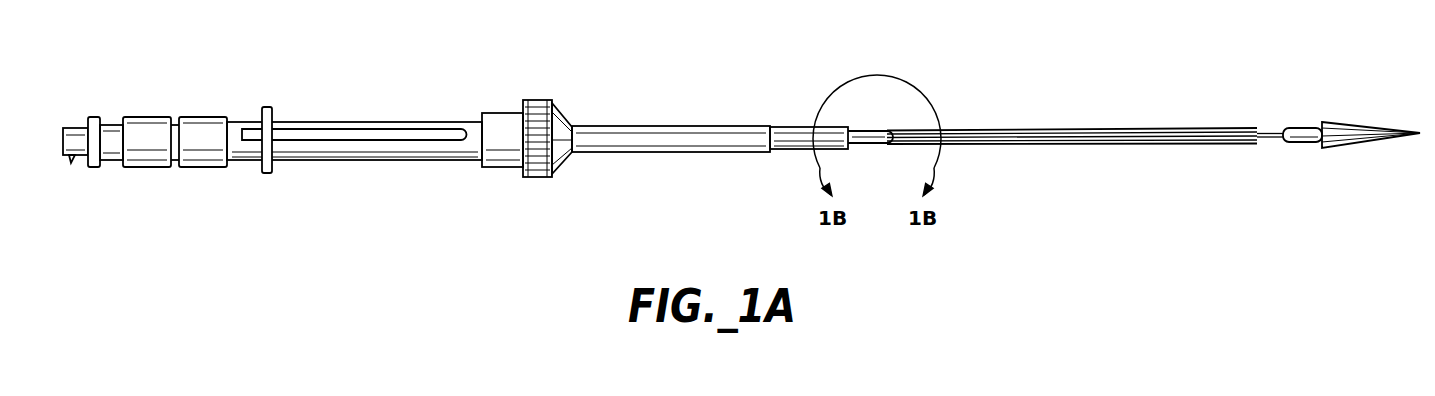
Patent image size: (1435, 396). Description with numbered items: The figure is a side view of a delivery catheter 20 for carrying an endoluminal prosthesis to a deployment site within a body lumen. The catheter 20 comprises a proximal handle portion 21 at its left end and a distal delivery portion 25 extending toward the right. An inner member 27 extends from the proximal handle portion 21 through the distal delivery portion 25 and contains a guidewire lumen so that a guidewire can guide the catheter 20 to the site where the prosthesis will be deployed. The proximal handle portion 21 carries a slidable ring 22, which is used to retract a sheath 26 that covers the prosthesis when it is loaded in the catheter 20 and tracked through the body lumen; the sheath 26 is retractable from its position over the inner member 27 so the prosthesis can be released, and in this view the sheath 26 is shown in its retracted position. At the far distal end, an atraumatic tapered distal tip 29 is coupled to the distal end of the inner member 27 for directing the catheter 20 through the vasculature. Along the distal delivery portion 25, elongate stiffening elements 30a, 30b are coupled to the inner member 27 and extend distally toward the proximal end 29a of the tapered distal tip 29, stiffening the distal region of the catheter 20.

The catheter 20 is at (588, 52).
The proximal handle portion 21 is at (349, 122).
The slidable ring 22 is at (267, 107).
The distal delivery portion 25 is at (807, 126).
The sheath 26 is at (793, 150).
The inner member 27 is at (1271, 127).
The atraumatic tapered distal tip 29 is at (1393, 129).
The proximal end of the tapered distal tip 29a is at (1303, 127).
The elongate stiffening element 30a is at (1132, 128).
The elongate stiffening element 30b is at (1183, 144).